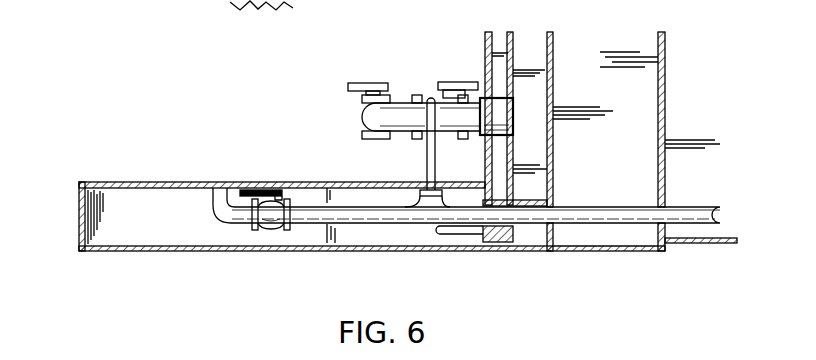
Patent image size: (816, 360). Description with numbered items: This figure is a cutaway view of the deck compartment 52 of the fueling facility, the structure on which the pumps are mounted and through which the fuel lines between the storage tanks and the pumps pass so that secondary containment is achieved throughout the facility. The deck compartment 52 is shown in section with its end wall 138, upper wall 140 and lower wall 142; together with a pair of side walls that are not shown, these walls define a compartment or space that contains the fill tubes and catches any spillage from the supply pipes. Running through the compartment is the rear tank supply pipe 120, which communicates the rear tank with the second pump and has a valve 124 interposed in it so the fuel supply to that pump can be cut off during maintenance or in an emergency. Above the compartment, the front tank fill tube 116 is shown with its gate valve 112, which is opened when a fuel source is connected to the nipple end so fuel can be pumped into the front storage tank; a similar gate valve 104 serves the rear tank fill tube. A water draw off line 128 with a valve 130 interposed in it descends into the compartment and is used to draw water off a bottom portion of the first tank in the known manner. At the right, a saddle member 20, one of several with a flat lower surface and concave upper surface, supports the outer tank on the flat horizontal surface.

The saddle member 20 is at (667, 82).
The deck compartment 52 is at (347, 208).
The gate valve 104 is at (458, 80).
The gate valve 112 is at (365, 88).
The front tank fill tube 116 is at (407, 100).
The rear tank supply pipe 120 is at (588, 200).
The valve 124 is at (268, 218).
The water draw off line 128 is at (425, 155).
The valve 130 is at (402, 205).
The end wall 138 is at (79, 225).
The upper wall 140 is at (160, 181).
The lower wall 142 is at (150, 255).